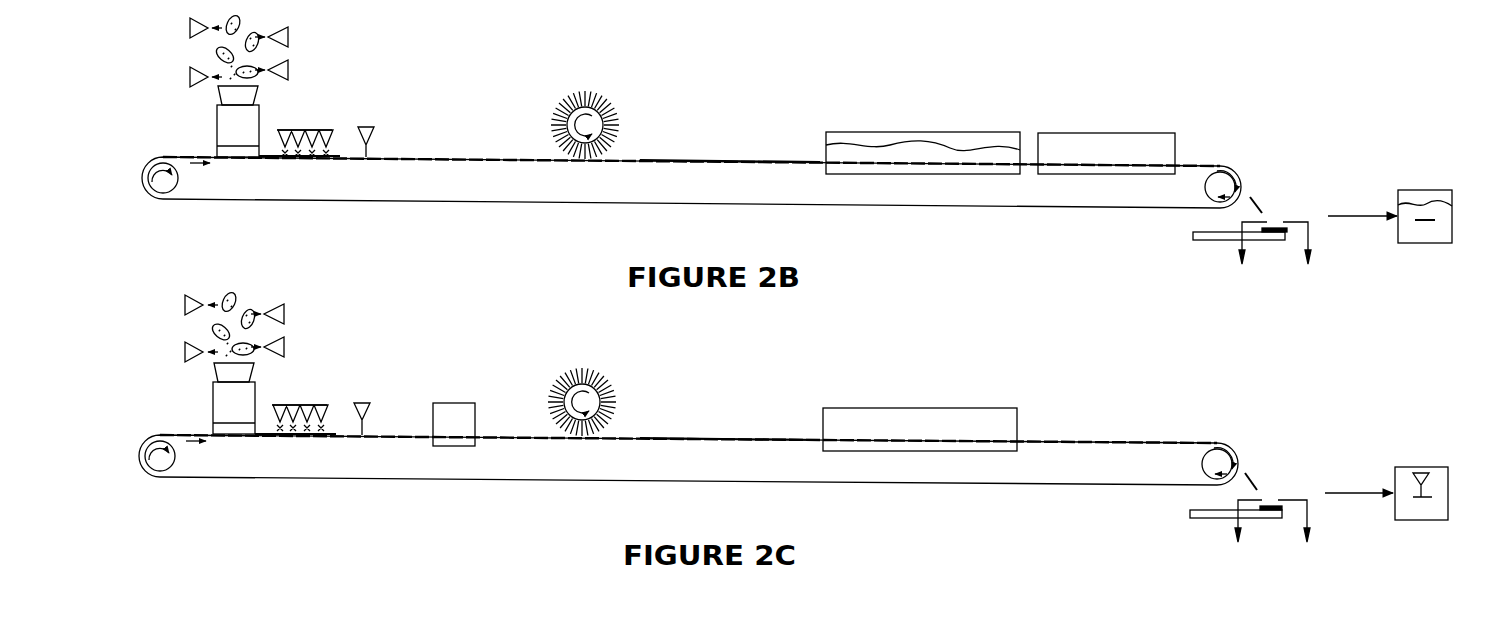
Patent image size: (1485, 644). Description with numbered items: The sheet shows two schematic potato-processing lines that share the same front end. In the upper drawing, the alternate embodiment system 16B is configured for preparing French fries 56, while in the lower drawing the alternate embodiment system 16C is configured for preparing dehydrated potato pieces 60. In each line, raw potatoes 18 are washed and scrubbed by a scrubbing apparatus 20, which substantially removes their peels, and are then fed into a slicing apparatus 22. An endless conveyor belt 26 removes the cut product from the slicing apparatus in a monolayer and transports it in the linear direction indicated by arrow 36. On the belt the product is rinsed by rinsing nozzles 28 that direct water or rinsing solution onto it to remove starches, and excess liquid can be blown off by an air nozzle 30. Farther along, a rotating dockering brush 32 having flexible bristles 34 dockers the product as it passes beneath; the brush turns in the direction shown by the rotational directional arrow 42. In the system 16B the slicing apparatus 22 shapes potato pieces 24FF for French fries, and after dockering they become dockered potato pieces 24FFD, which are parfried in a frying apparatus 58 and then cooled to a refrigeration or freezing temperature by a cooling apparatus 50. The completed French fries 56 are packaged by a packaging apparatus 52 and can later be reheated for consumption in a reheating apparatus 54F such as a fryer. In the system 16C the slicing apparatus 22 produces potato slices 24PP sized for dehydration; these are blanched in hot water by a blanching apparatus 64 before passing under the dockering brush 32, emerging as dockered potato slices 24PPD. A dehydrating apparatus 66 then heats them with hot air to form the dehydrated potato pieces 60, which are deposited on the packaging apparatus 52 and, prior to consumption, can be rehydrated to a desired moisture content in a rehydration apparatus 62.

In FIG. 2B, the alternate embodiment system 16B is at (812, 85).
In FIG. 2C, the alternate embodiment system 16C is at (807, 363).
In FIG. 2B, the potatoes 18 is at (240, 17).
In FIG. 2C, the potatoes 18 is at (236, 295).
In FIG. 2B, the scrubbing apparatus 20 is at (292, 62).
In FIG. 2C, the scrubbing apparatus 20 is at (287, 340).
In FIG. 2B, the slicing apparatus 22 is at (223, 130).
In FIG. 2C, the slicing apparatus 22 is at (218, 407).
In FIG. 2B, the potato pieces 24FF is at (270, 155).
In FIG. 2B, the dockered potato pieces 24FFD is at (717, 160).
In FIG. 2C, the potato slices 24PP is at (266, 433).
In FIG. 2C, the dockered potato slices 24PPD is at (713, 438).
In FIG. 2B, the conveyor belt 26 is at (273, 199).
In FIG. 2C, the conveyor belt 26 is at (268, 477).
In FIG. 2B, the rinsing nozzles 28 is at (322, 130).
In FIG. 2C, the rinsing nozzles 28 is at (319, 405).
In FIG. 2B, the air nozzle 30 is at (368, 127).
In FIG. 2C, the air nozzle 30 is at (364, 403).
In FIG. 2B, the dockering brush 32 is at (613, 122).
In FIG. 2C, the dockering brush 32 is at (613, 402).
In FIG. 2B, the flexible bristles 34 is at (610, 108).
In FIG. 2C, the flexible bristles 34 is at (608, 385).
In FIG. 2B, the arrow 36 is at (202, 165).
In FIG. 2C, the arrow 36 is at (198, 443).
In FIG. 2B, the rotational directional arrow 42 is at (578, 137).
In FIG. 2C, the rotational directional arrow 42 is at (575, 413).
In FIG. 2B, the cooling apparatus 50 is at (1093, 133).
In FIG. 2B, the packaging apparatus 52 is at (1195, 237).
In FIG. 2C, the packaging apparatus 52 is at (1192, 518).
In FIG. 2B, the reheating apparatus 54F is at (1438, 243).
In FIG. 2B, the French fries 56 is at (1272, 228).
In FIG. 2B, the frying apparatus 58 is at (895, 132).
In FIG. 2C, the dehydrated potato pieces 60 is at (1270, 506).
In FIG. 2C, the rehydration apparatus 62 is at (1437, 522).
In FIG. 2C, the blanching apparatus 64 is at (452, 447).
In FIG. 2C, the dehydrating apparatus 66 is at (890, 408).